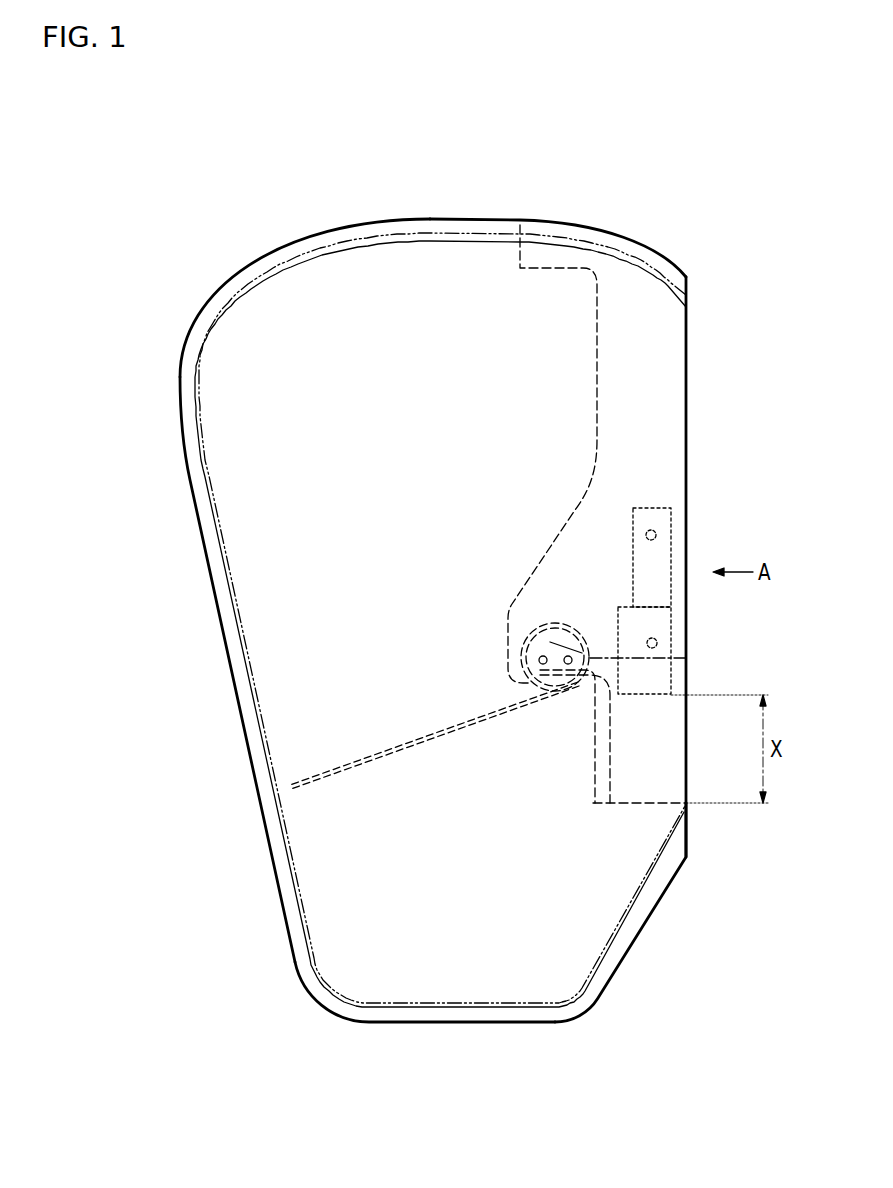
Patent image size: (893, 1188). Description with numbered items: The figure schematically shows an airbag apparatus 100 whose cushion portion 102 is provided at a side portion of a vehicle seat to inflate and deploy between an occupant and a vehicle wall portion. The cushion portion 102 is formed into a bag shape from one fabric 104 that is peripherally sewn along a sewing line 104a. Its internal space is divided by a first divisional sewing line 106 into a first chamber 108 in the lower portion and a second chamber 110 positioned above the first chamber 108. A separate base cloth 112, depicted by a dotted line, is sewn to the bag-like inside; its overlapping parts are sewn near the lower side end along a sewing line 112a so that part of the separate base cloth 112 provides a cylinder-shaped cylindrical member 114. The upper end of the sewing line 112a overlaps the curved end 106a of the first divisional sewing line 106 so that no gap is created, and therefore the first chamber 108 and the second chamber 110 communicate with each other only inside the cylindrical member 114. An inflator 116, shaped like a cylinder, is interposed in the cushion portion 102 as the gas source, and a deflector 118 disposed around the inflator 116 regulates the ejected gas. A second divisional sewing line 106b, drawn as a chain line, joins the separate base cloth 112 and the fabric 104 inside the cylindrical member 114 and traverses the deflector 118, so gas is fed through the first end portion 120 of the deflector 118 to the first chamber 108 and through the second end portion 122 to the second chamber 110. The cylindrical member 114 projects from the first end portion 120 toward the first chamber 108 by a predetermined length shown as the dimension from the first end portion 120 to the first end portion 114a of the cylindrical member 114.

The airbag apparatus 100 is at (437, 188).
The cushion portion 102 is at (197, 513).
The fabric 104 is at (287, 295).
The sewing line 104a is at (240, 637).
The first divisional sewing line 106 is at (380, 747).
The end of first divisional sewing line 106a is at (550, 623).
The second divisional sewing line 106b is at (673, 660).
The first chamber 108 is at (320, 885).
The second chamber 110 is at (233, 387).
The separate base cloth 112 is at (630, 308).
The sewing line 112a is at (608, 763).
The cylindrical member 114 is at (628, 783).
The first end portion of cylindrical member 114a is at (650, 808).
The inflator 116 is at (662, 553).
The deflector 118 is at (658, 632).
The first end portion of deflector 120 is at (653, 697).
The second end portion of deflector 122 is at (648, 607).